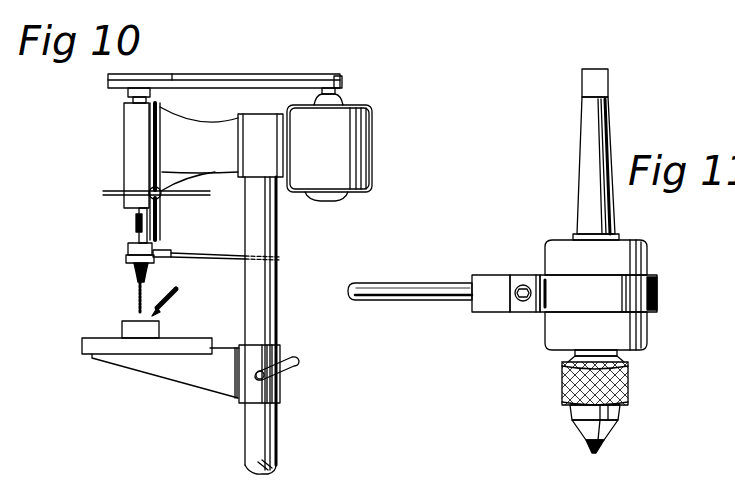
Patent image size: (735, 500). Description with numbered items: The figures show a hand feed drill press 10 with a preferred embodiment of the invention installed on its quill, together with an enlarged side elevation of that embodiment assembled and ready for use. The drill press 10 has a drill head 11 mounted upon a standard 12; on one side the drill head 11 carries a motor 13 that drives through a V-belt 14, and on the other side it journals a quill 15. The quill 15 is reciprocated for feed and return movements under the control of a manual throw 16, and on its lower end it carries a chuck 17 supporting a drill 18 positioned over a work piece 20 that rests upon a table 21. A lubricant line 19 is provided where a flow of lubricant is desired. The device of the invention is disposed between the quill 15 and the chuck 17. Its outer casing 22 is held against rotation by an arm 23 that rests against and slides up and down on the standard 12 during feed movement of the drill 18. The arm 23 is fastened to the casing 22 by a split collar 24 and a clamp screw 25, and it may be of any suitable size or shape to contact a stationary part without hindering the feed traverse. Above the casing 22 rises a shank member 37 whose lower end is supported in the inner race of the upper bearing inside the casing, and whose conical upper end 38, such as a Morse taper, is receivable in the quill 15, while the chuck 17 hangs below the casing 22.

In FIG. 10, the drill press 10 is at (318, 251).
In FIG. 10, the drill head 11 is at (188, 122).
In FIG. 10, the standard 12 is at (262, 306).
In FIG. 10, the motor 13 is at (343, 150).
In FIG. 10, the V-belt 14 is at (280, 84).
In FIG. 10, the quill 15 is at (136, 226).
In FIG. 10, the manual throw 16 is at (202, 192).
In FIG. 10, the chuck 17 is at (148, 278).
In FIG. 11, the chuck 17 is at (568, 388).
In FIG. 10, the drill 18 is at (136, 298).
In FIG. 10, the lubricant line 19 is at (176, 300).
In FIG. 10, the work piece 20 is at (152, 330).
In FIG. 10, the table 21 is at (95, 340).
In FIG. 10, the outer casing 22 is at (122, 247).
In FIG. 11, the outer casing 22 is at (622, 325).
In FIG. 10, the arm 23 is at (196, 258).
In FIG. 11, the arm 23 is at (406, 303).
In FIG. 11, the split collar 24 is at (497, 255).
In FIG. 11, the clamp screw 25 is at (521, 303).
In FIG. 11, the shank member 37 is at (592, 165).
In FIG. 11, the conical upper end 38 is at (580, 125).